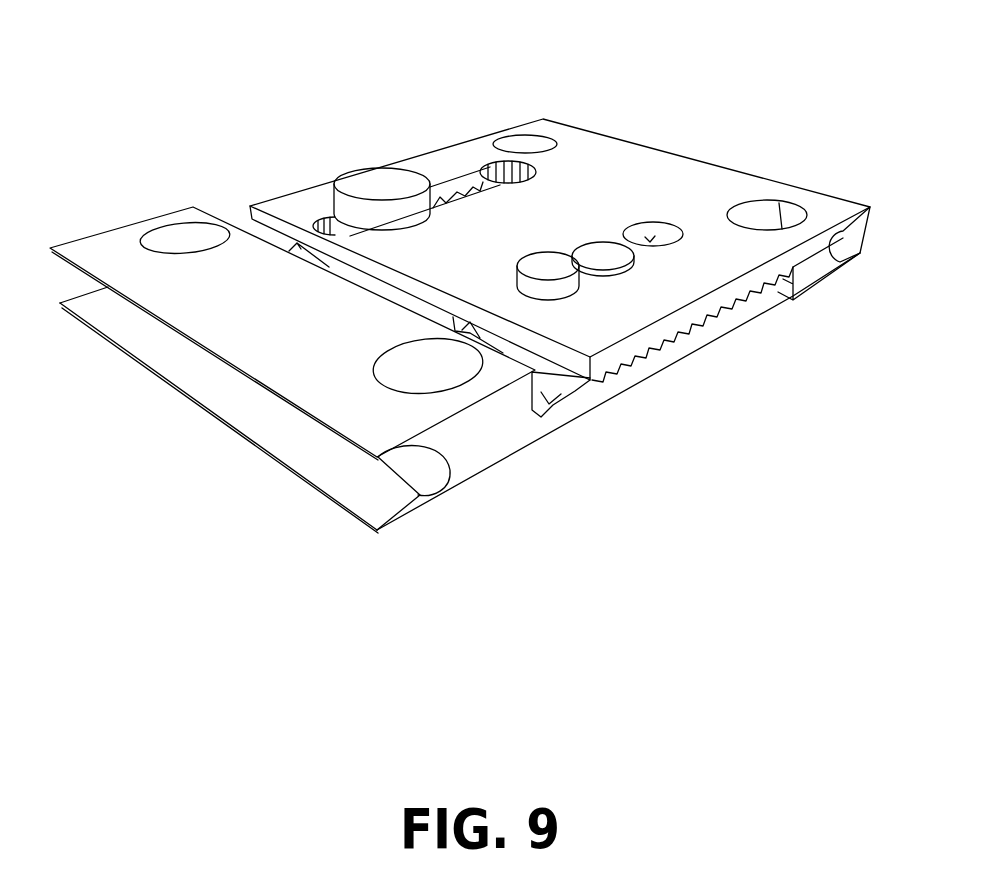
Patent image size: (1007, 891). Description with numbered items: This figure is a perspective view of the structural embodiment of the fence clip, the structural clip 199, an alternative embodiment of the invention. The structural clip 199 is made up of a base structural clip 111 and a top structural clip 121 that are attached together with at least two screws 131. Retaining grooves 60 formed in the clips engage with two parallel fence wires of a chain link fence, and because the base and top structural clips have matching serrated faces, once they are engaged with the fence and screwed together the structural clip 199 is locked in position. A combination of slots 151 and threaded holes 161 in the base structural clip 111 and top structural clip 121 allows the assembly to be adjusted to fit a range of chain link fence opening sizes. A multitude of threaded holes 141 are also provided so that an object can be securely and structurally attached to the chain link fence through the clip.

The retaining groove 60 is at (697, 113).
The base structural clip 111 is at (490, 440).
The top structural clip 121 is at (688, 183).
The screw 131 is at (368, 182).
The threaded hole 141 is at (183, 237).
The slot 151 is at (480, 173).
The threaded hole 161 is at (670, 237).
The structural clip 199 is at (672, 430).